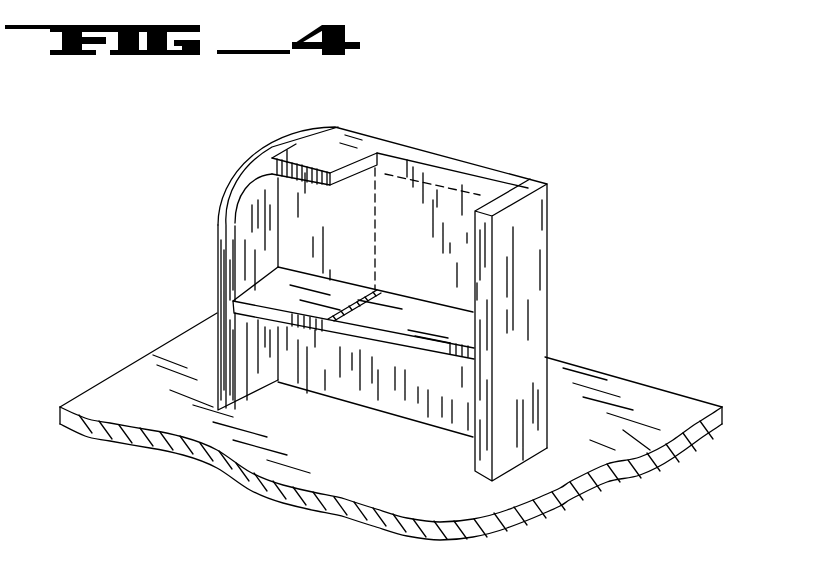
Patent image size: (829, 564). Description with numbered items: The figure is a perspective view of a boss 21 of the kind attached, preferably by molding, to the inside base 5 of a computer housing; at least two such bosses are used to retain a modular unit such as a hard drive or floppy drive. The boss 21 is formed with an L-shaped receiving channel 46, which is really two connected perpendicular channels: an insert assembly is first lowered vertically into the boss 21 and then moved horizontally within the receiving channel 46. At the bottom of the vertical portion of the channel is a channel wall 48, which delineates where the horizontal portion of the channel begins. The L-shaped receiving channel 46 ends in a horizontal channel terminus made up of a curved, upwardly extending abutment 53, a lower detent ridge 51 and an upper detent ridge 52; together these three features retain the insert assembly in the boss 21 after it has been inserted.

The base 5 is at (392, 473).
The boss 21 is at (517, 144).
The L-shaped receiving channel 46 is at (360, 238).
The channel wall 48 is at (388, 328).
The lower detent ridge 51 is at (378, 290).
The upper detent ridge 52 is at (332, 187).
The curved, upwardly extending abutment 53 is at (266, 253).